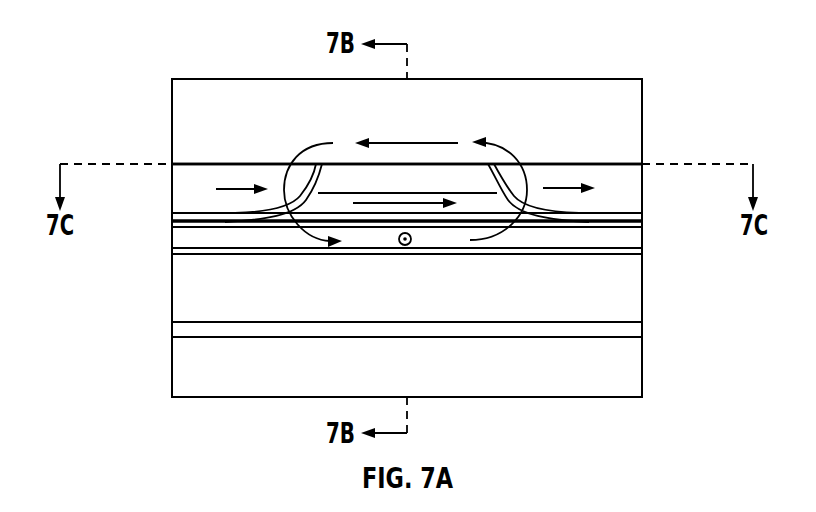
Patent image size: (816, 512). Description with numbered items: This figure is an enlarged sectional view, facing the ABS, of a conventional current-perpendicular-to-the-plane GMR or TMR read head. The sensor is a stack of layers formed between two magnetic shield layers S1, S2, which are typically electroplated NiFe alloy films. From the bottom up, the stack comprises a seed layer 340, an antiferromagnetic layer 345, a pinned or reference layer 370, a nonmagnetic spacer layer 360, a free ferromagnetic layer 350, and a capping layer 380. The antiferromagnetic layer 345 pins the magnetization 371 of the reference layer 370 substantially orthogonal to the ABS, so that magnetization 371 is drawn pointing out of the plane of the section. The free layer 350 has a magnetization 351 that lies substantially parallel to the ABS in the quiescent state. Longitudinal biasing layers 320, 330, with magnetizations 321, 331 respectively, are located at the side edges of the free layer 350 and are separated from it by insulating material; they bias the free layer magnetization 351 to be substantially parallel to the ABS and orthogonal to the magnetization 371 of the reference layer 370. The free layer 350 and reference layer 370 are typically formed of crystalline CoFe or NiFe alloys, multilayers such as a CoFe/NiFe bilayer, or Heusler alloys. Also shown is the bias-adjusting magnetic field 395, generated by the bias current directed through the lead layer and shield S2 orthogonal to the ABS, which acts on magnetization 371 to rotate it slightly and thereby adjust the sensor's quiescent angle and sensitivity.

The longitudinal biasing layer 320 is at (186, 200).
The magnetization of longitudinal biasing layer 321 is at (226, 188).
The longitudinal biasing layer 330 is at (625, 192).
The magnetization of longitudinal biasing layer 331 is at (550, 188).
The seed layer 340 is at (188, 331).
The antiferromagnetic layer 345 is at (188, 302).
The free ferromagnetic layer 350 is at (378, 197).
The magnetization of free layer 351 is at (415, 203).
The nonmagnetic spacer layer 360 is at (460, 218).
The reference layer 370 is at (187, 235).
The magnetization of reference layer 371 is at (403, 246).
The capping layer 380 is at (482, 173).
The bias-adjusting magnetic field 395 is at (312, 145).
The magnetic shield layer S1 is at (212, 395).
The magnetic shield layer S2 is at (187, 87).
The air bearing surface ABS is at (622, 393).